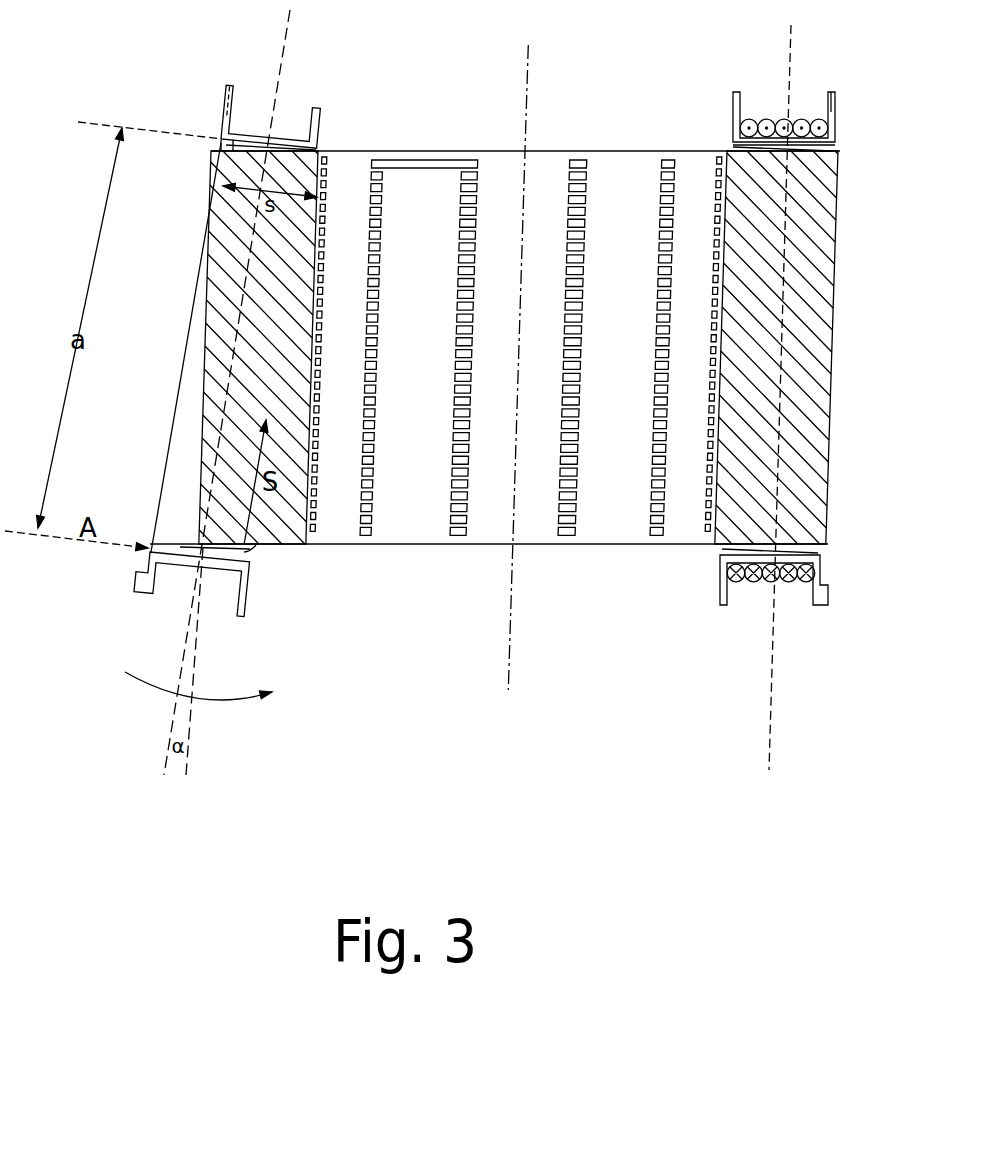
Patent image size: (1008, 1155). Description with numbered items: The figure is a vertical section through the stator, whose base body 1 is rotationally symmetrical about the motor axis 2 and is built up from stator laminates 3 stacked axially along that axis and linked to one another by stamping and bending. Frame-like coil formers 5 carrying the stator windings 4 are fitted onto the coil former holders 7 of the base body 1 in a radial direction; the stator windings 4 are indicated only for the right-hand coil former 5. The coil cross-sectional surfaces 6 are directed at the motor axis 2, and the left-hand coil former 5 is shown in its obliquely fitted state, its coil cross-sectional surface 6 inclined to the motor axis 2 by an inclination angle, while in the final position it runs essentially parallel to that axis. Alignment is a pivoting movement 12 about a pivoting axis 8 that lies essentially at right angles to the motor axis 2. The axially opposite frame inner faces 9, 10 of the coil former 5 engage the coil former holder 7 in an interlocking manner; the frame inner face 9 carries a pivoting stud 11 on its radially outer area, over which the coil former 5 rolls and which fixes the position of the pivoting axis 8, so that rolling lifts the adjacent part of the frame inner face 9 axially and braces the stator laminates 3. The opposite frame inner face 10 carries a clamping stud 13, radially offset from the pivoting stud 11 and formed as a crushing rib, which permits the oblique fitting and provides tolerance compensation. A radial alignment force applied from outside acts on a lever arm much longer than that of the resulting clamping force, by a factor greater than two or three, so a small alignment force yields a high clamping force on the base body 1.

The base body 1 is at (600, 590).
The motor axis 2 is at (528, 67).
The stator laminates 3 is at (462, 160).
The stator windings 4 is at (792, 112).
The coil former 5 is at (220, 128).
The coil cross-sectional surface 6 is at (245, 262).
The coil former holder 7 is at (210, 230).
The pivoting axis 8 is at (232, 147).
The frame inner face 9 is at (330, 151).
The frame inner face 10 is at (255, 545).
The pivoting stud 11 is at (235, 148).
The pivot direction 12 is at (222, 700).
The clamping stud 13 is at (247, 557).